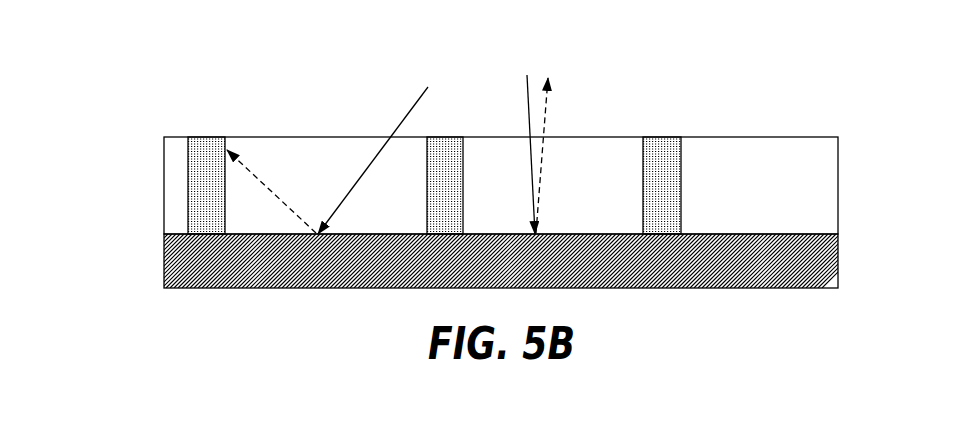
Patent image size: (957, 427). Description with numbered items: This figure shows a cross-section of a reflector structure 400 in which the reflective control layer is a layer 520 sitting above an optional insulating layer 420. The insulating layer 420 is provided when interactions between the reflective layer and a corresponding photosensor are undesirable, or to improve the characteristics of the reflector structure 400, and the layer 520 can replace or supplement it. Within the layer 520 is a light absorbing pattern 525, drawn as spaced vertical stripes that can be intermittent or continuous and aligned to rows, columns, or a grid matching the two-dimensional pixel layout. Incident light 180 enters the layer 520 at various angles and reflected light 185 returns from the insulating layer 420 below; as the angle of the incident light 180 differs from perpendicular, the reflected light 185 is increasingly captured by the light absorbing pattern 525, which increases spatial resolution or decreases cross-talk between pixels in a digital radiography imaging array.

The reflector structure 400 is at (153, 287).
The insulating layer 420 is at (838, 248).
The layer 520 is at (838, 173).
The light absorbing pattern 525 is at (210, 148).
The incident light 180 is at (526, 117).
The reflected light 185 is at (412, 148).